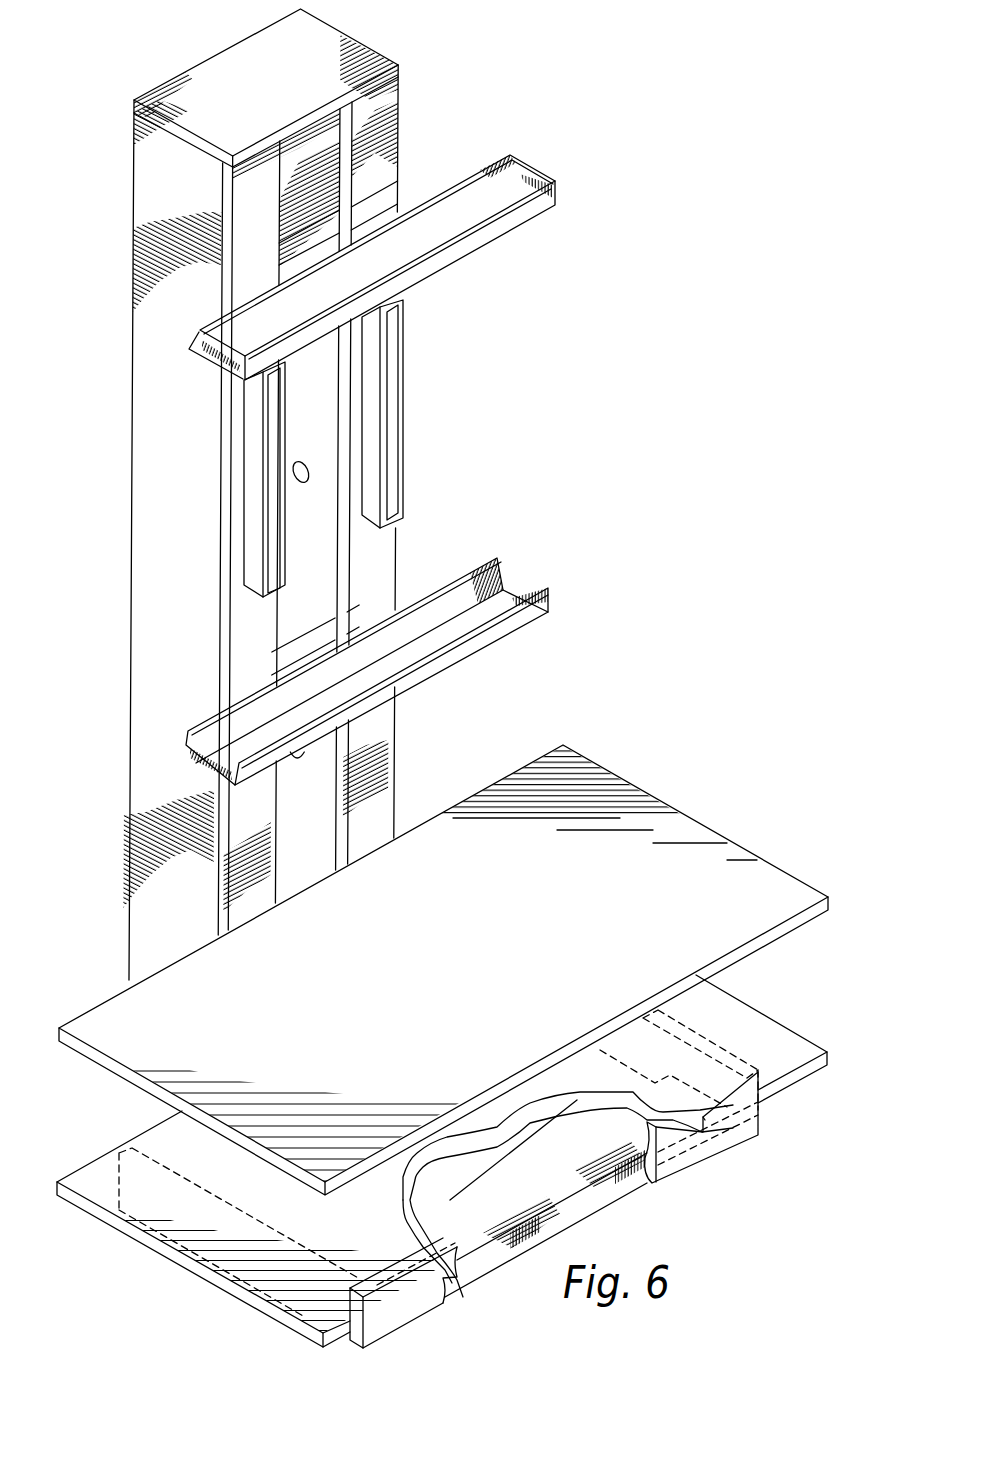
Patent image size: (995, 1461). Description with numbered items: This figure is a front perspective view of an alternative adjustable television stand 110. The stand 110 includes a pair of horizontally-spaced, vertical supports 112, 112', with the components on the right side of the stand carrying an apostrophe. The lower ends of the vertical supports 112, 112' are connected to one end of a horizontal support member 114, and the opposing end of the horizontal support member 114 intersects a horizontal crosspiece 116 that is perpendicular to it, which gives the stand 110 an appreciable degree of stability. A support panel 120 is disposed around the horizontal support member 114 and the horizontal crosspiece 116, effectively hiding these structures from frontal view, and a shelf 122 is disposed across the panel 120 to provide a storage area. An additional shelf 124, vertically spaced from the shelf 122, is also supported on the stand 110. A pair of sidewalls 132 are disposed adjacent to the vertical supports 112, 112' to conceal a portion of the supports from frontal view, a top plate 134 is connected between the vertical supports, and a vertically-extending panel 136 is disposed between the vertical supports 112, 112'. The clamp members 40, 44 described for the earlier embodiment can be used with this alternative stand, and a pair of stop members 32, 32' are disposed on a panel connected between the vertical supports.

The television stand 110 is at (730, 327).
The top plate 134 is at (224, 62).
The sidewall 132 is at (141, 436).
The vertical support 112 is at (198, 549).
The vertical support 112' is at (398, 473).
The vertically-extending panel 136 is at (328, 626).
The clamp member 40 is at (441, 276).
The clamp member 44 is at (452, 675).
The stop member 32 is at (228, 479).
The stop member 32' is at (413, 414).
The additional shelf 124 is at (778, 886).
The shelf 122 is at (780, 1036).
The horizontal crosspiece 116 is at (572, 1205).
The support panel 120 is at (750, 1125).
The horizontal support member 114 is at (410, 1201).